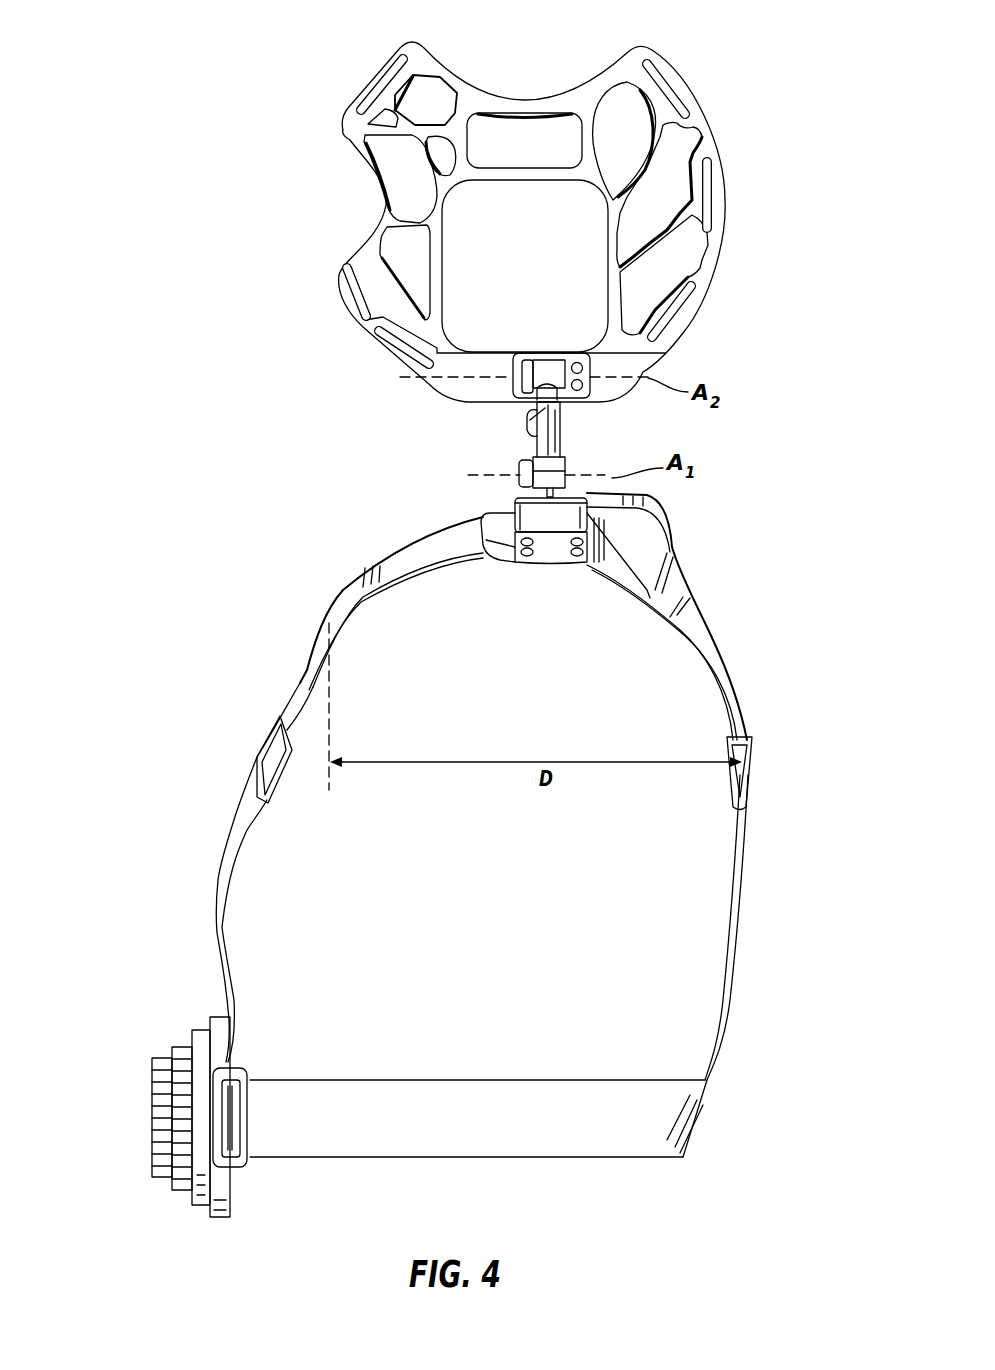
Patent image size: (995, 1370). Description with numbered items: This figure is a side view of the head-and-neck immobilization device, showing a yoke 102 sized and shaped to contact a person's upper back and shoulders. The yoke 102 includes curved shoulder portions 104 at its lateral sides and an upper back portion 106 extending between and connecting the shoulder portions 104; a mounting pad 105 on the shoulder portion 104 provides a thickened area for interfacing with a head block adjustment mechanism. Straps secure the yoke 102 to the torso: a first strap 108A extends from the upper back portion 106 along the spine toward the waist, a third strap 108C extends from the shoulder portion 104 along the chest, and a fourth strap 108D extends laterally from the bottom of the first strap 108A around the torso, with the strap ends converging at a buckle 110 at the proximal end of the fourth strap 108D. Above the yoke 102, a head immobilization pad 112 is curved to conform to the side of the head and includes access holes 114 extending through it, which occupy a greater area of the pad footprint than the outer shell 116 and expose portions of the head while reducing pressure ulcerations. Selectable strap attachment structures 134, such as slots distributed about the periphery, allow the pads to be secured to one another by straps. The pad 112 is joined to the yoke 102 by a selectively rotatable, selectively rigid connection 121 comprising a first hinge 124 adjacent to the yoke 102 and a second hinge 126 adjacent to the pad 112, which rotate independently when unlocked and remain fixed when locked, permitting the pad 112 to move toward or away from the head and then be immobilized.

The yoke 102 is at (453, 851).
The shoulder portions 104 is at (548, 578).
The mounting pads 105 is at (543, 520).
The upper back portion 106 is at (703, 682).
The first strap 108A is at (735, 928).
The third strap 108C is at (237, 820).
The fourth strap 108D is at (468, 1100).
The buckle 110 is at (150, 1125).
The head immobilization pad 112 is at (578, 204).
The access holes 114 is at (546, 157).
The outer shell 116 is at (585, 105).
The selectively rotatable, selectively rigid connection 121 is at (572, 425).
The first hinge 124 is at (518, 472).
The second hinge 126 is at (512, 393).
The selectable strap attachment structures 134 is at (385, 80).